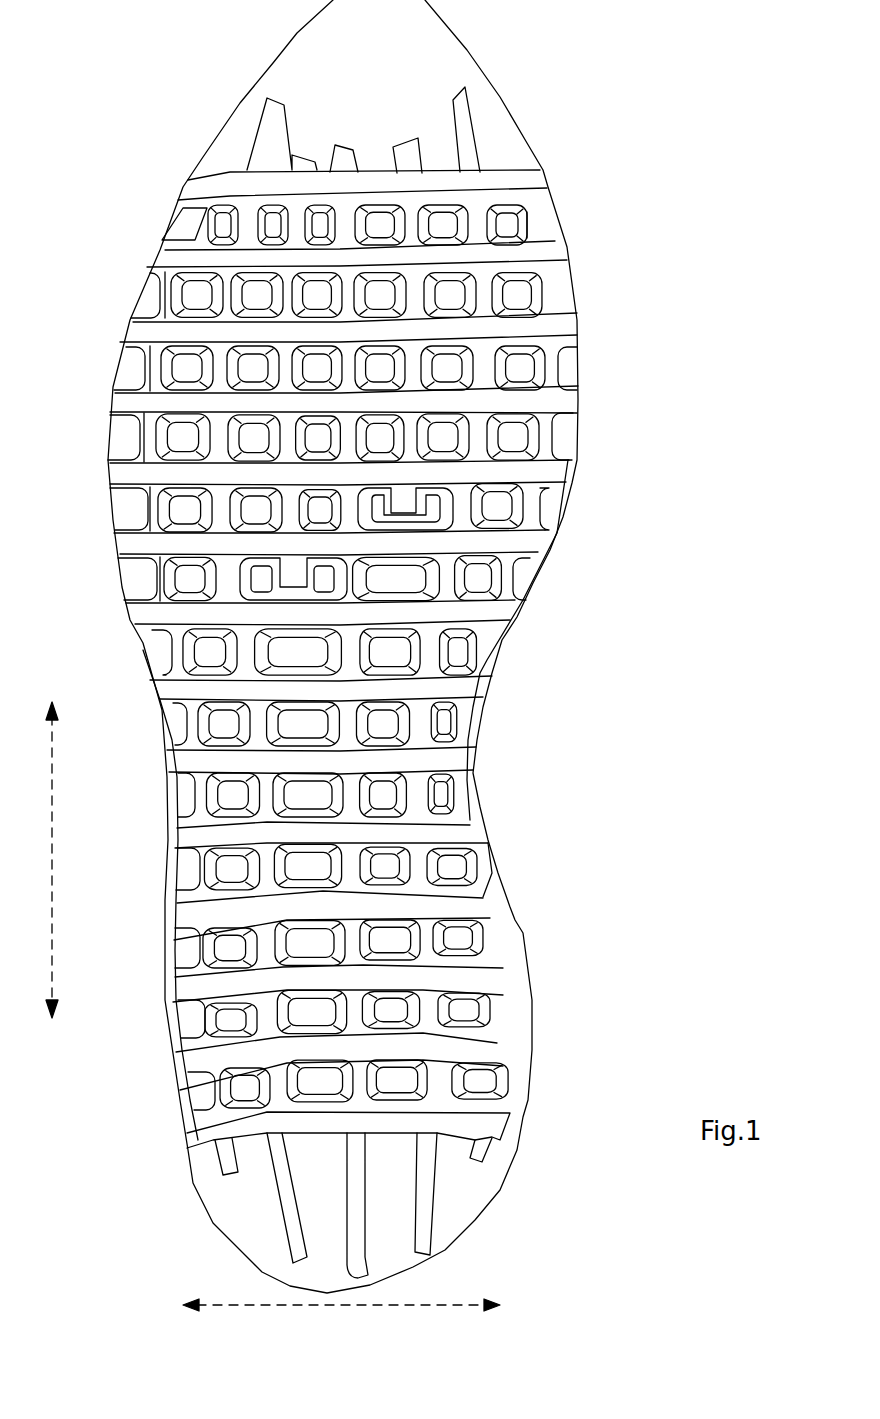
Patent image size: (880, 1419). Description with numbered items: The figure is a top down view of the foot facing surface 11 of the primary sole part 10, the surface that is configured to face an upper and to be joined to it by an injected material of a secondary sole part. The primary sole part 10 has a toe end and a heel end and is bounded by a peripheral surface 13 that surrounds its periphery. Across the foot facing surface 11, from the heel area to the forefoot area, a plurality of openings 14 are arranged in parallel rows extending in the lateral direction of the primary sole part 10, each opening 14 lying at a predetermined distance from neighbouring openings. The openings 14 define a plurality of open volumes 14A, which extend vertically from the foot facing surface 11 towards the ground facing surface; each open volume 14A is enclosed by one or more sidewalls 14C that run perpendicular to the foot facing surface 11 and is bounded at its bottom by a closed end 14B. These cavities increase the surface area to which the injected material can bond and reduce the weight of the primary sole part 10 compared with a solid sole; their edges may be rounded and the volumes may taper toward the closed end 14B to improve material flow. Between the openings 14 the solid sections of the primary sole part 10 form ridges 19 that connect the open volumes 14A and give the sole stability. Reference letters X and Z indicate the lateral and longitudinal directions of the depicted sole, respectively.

The primary sole part 10 is at (425, 646).
The foot facing surface 11 is at (388, 74).
The peripheral surface 13 is at (493, 893).
The openings 14 is at (533, 228).
The open volumes 14A is at (178, 352).
The closed end 14B is at (505, 223).
The sidewalls 14C is at (525, 225).
The ridges 19 is at (463, 690).
The transverse direction X is at (367, 1304).
The longitudinal direction Z is at (52, 893).